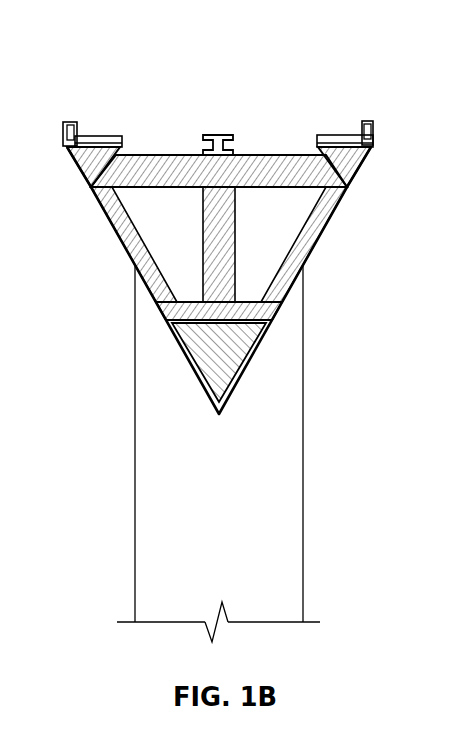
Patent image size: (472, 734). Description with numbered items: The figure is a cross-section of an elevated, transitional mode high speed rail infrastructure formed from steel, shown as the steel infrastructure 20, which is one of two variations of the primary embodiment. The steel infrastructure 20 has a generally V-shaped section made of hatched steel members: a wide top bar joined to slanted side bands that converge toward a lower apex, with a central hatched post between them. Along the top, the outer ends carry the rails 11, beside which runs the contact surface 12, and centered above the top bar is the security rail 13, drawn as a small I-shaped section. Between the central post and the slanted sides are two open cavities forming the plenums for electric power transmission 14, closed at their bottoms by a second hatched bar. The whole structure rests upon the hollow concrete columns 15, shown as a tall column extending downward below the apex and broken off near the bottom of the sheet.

The rails 11 is at (382, 122).
The contact surface 12 is at (352, 124).
The security rail 13 is at (219, 124).
The plenums for electric power transmission 14 is at (188, 290).
The hollow concrete columns 15 is at (232, 461).
The steel infrastructure 20 is at (118, 244).